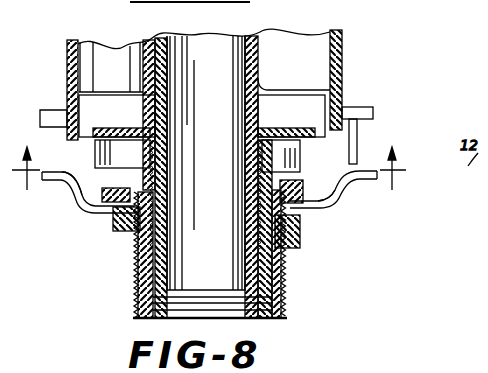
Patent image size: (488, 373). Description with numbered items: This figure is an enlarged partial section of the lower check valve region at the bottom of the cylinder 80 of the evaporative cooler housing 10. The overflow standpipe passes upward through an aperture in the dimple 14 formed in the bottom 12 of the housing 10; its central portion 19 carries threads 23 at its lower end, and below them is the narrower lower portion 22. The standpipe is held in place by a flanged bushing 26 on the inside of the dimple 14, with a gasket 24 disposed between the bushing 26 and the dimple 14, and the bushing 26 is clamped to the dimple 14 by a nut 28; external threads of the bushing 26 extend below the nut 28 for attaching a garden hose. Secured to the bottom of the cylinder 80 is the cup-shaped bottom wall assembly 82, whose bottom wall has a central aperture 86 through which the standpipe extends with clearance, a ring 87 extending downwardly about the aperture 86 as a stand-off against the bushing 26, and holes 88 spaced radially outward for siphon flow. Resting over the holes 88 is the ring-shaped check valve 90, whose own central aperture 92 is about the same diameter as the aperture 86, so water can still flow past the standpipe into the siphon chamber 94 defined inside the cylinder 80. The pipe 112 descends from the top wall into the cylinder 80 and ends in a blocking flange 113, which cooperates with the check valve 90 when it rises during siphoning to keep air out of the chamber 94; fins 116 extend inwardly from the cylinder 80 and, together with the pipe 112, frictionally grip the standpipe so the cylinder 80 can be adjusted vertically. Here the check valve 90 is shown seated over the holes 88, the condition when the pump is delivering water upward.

The evaporative cooler housing 10 is at (209, 175).
The bottom 12 is at (368, 170).
The dimple 14 is at (86, 204).
The central portion 19 is at (160, 36).
The lower portion 22 is at (284, 284).
The threads 23 is at (128, 236).
The gasket 24 is at (110, 224).
The flanged bushing 26 is at (296, 220).
The nut 28 is at (290, 246).
The cylinder 80 is at (342, 68).
The bottom wall assembly 82 is at (372, 106).
The central aperture 86 is at (296, 172).
The ring 87 is at (136, 166).
The holes 88 is at (322, 200).
The check valve 90 is at (278, 128).
The central aperture 92 is at (150, 130).
The siphon chamber 94 is at (330, 30).
The pipe 112 is at (147, 62).
The blocking flange 113 is at (113, 62).
The fins 116 is at (288, 40).